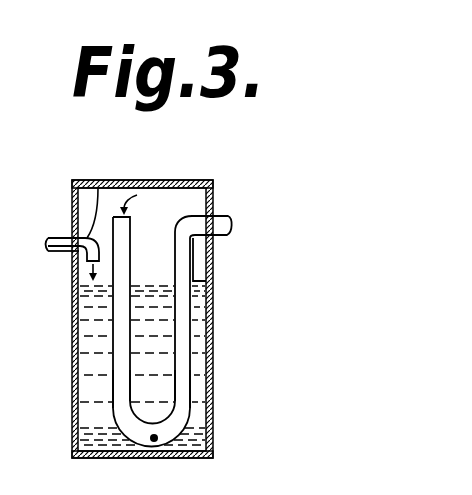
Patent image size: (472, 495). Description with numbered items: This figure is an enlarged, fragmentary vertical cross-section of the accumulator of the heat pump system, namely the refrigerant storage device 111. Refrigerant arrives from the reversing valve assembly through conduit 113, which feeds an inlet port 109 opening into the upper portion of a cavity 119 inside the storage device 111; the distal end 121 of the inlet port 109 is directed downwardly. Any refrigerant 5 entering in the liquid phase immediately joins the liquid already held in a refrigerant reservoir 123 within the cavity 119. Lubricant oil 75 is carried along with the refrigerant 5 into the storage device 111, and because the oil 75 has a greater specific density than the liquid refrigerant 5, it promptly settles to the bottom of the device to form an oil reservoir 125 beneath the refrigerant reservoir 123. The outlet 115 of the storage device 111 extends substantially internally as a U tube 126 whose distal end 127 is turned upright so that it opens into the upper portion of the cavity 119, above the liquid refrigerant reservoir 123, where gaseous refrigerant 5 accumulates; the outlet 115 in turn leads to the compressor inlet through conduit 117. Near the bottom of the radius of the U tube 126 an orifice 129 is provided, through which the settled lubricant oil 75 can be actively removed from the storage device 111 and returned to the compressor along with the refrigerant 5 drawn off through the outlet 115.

The refrigerant 5 is at (196, 327).
The lubricant oil 75 is at (213, 438).
The inlet port 109 is at (98, 188).
The refrigerant storage device 111 is at (136, 180).
The conduit 113 is at (58, 237).
The outlet 115 is at (183, 229).
The conduit 117 is at (228, 237).
The cavity 119 is at (213, 190).
The distal end 121 is at (72, 257).
The refrigerant reservoir 123 is at (86, 346).
The oil reservoir 125 is at (78, 448).
The U tube 126 is at (122, 388).
The distal end 127 is at (140, 228).
The orifice 129 is at (157, 442).